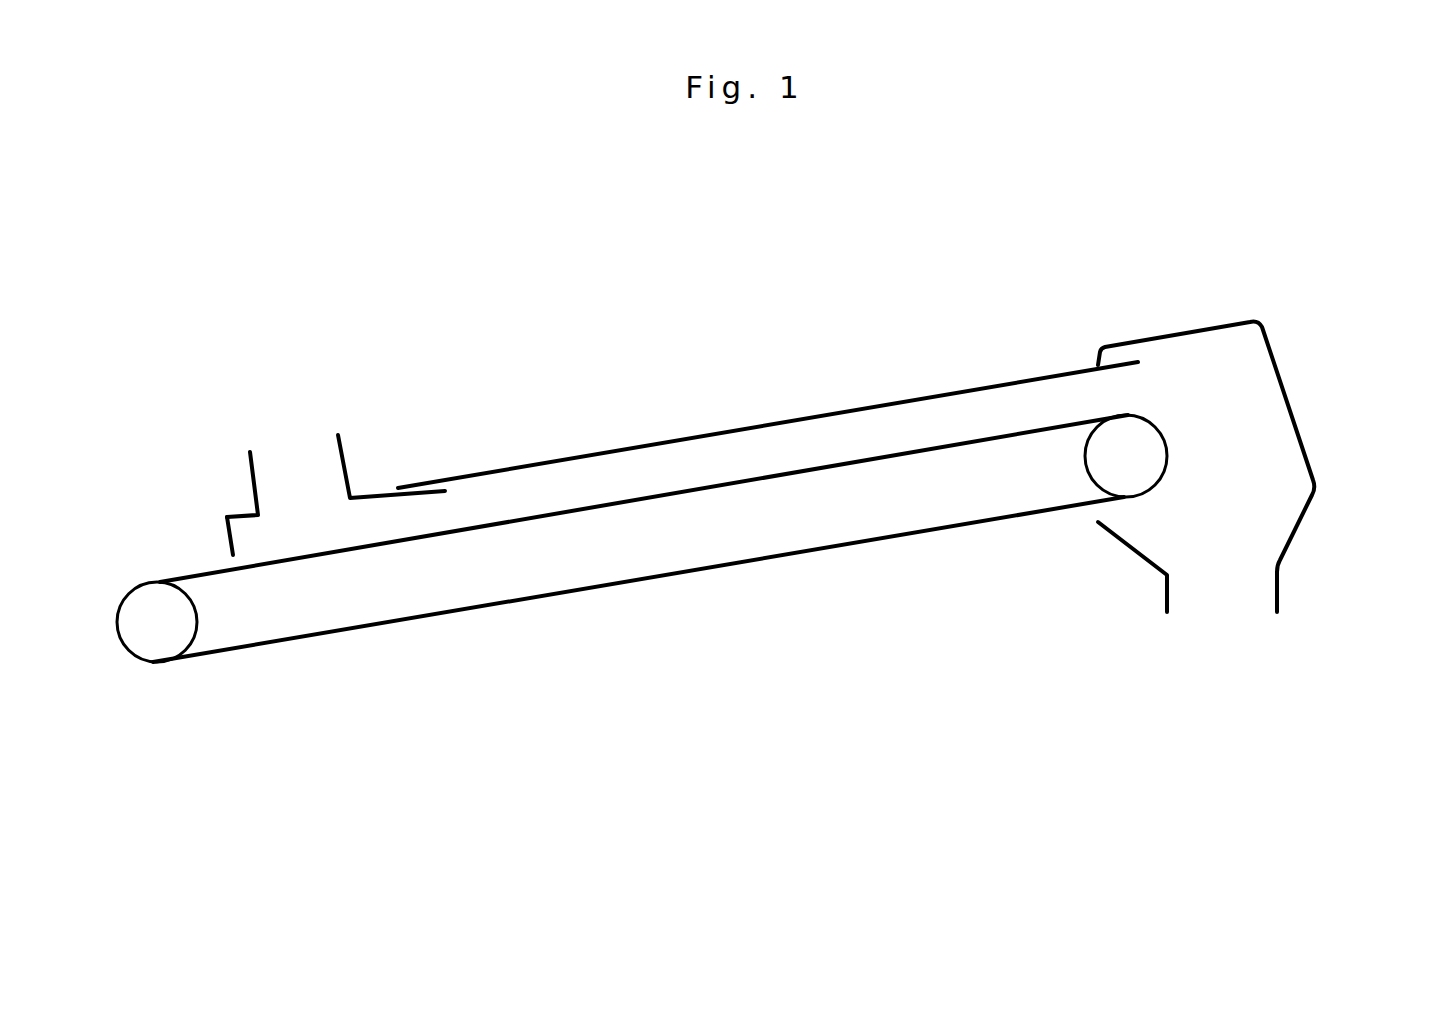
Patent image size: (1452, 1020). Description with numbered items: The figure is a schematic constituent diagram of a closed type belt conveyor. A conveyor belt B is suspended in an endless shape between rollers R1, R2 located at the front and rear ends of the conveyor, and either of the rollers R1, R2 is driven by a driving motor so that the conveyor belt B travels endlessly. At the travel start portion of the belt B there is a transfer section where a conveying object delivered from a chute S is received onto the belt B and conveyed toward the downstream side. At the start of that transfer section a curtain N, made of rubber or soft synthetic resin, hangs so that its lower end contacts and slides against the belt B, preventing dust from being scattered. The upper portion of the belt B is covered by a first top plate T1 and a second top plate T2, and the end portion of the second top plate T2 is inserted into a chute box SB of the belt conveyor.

The conveyor belt B is at (302, 642).
The roller R1 is at (153, 650).
The roller R2 is at (1133, 477).
The chute S is at (250, 480).
The curtain N is at (227, 540).
The first top plate T1 is at (390, 492).
The second top plate T2 is at (580, 453).
The chute box SB is at (1287, 392).